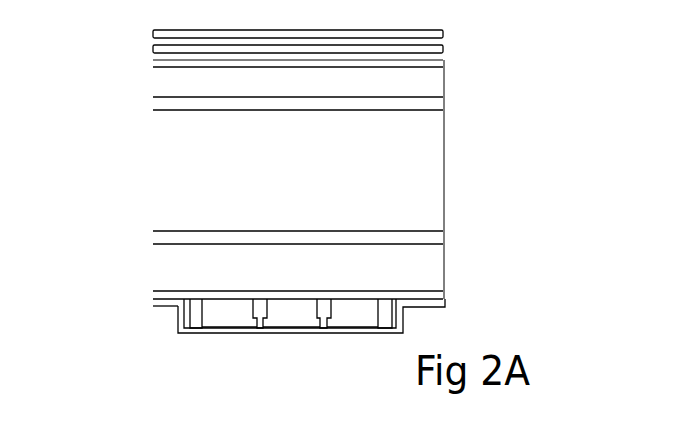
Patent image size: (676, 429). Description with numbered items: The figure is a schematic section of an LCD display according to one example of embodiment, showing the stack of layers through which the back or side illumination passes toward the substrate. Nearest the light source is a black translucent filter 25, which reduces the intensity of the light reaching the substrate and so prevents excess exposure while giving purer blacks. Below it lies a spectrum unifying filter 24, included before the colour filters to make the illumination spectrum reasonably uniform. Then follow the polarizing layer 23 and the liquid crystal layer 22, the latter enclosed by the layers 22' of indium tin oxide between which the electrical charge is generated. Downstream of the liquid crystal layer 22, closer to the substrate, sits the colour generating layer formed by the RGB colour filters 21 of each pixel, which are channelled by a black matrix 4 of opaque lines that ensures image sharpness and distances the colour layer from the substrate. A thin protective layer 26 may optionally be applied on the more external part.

The black translucent filter 25 is at (413, 35).
The spectrum unifying filter 24 is at (175, 51).
The polarizing layer 23 is at (323, 63).
The layers between which the electrical charge is generated 22' is at (257, 163).
The liquid crystal layer 22 is at (258, 179).
The protective layer 26 is at (395, 310).
The black matrix 4 is at (260, 306).
The RGB colour filters 21 is at (345, 305).